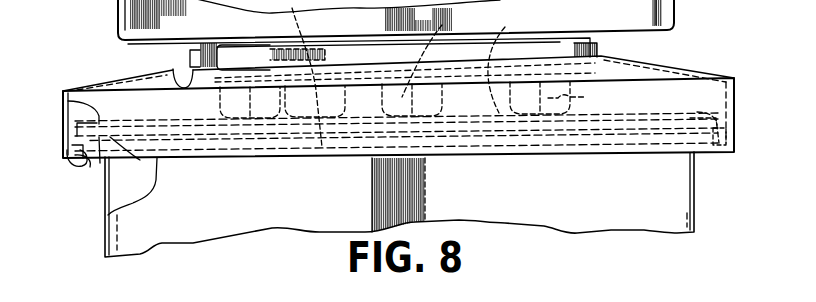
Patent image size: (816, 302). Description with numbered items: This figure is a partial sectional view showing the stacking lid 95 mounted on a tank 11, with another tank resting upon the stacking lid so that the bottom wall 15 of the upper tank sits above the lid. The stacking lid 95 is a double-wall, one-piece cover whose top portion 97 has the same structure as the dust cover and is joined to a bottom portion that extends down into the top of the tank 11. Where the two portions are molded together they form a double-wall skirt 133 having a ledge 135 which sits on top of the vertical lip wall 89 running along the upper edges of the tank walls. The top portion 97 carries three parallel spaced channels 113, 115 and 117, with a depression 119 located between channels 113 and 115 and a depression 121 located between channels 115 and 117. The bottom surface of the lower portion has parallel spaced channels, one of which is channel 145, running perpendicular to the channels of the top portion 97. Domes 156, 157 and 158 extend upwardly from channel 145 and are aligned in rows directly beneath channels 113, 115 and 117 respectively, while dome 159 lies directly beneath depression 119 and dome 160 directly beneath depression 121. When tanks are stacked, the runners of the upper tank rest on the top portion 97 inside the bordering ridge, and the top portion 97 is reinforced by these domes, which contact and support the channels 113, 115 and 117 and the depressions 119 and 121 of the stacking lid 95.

The tank 11 is at (118, 9).
The bottom wall 15 is at (636, 33).
The vertical lip wall 89 is at (75, 163).
The stacking lid 95 is at (735, 86).
The top portion 97 is at (107, 79).
The channel 113 is at (258, 66).
The channel 115 is at (442, 25).
The channel 117 is at (637, 116).
The depression 119 is at (308, 73).
The depression 121 is at (505, 27).
The double-wall skirt 133 is at (63, 152).
The ledge 135 is at (67, 115).
The channel 145 is at (180, 128).
The dome 156 is at (244, 123).
The dome 157 is at (403, 127).
The dome 158 is at (572, 128).
The dome 159 is at (307, 140).
The dome 160 is at (478, 142).